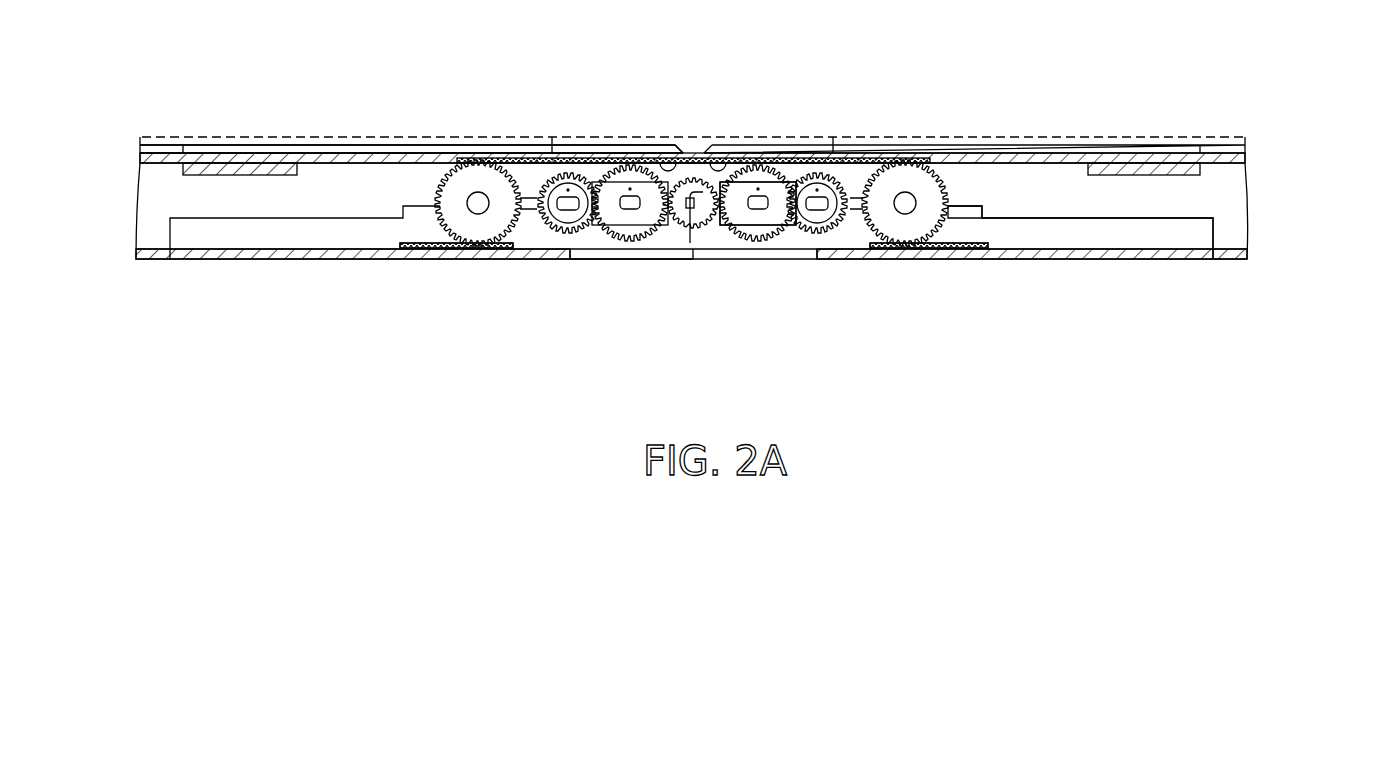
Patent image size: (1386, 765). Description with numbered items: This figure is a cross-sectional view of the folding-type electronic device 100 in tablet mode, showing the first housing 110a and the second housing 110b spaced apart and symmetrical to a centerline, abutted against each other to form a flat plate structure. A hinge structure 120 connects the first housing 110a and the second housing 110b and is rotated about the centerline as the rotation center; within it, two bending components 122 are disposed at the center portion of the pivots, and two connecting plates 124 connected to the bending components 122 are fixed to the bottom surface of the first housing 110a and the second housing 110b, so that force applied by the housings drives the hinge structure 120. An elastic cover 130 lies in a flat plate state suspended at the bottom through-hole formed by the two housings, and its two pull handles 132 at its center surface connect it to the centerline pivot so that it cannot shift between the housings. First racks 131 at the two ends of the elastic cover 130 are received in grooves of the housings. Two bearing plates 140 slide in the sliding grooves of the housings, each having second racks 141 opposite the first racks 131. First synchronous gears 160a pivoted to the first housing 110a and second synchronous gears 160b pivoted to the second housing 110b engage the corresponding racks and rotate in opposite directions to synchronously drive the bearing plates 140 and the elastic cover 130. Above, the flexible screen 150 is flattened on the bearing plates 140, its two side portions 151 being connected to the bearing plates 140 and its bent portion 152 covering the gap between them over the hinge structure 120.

The folding-type electronic device 100 is at (1362, 433).
The first housing 110a is at (270, 262).
The second housing 110b is at (1110, 260).
The hinge structure 120 is at (733, 207).
The bending component 122 is at (972, 212).
The connecting plate 124 is at (1127, 238).
The elastic cover 130 is at (770, 245).
The first rack 131 is at (455, 250).
The pull handle 132 is at (700, 225).
The bearing plate 140 is at (1052, 152).
The second rack 141 is at (693, 97).
The flexible screen 150 is at (773, 58).
The side portion 151 is at (857, 142).
The bent portion 152 is at (810, 142).
The first synchronous gear 160a is at (478, 185).
The second synchronous gear 160b is at (915, 162).